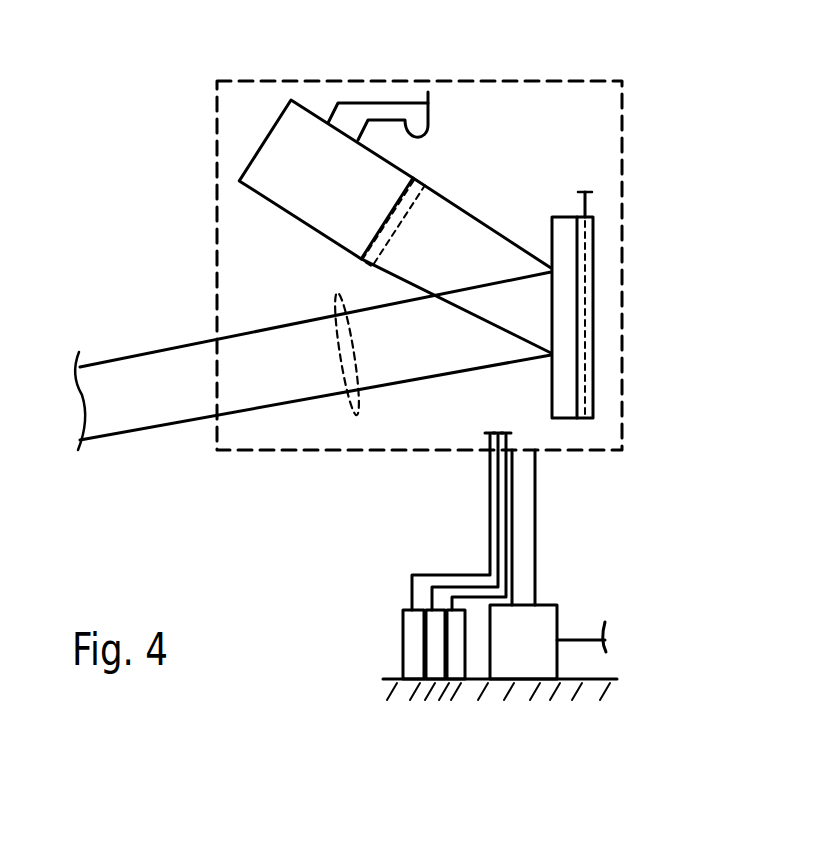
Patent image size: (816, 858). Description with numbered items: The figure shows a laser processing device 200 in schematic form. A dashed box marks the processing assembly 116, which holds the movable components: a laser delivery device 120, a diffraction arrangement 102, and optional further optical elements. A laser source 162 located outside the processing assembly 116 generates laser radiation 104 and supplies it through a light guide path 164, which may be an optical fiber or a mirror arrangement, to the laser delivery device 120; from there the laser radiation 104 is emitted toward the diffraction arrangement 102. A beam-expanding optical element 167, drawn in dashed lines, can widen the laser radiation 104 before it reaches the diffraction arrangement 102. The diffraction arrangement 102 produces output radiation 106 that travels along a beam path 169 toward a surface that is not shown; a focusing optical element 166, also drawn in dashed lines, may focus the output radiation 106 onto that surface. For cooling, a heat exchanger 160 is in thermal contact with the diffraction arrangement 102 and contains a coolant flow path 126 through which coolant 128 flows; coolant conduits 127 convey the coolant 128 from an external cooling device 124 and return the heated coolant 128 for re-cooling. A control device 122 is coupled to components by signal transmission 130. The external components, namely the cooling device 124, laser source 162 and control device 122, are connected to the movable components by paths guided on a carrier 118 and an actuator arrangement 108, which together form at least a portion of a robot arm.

The laser processing device 200 is at (131, 93).
The processing assembly 116 is at (216, 218).
The laser delivery device 120 is at (293, 223).
The beam-expanding optical element 167 is at (397, 252).
The laser radiation 104 is at (458, 200).
The output radiation 106 is at (280, 403).
The beam path 169 is at (260, 320).
The focusing optical element 166 is at (360, 410).
The diffraction arrangement 102 is at (553, 215).
The heat exchanger 160 is at (593, 350).
The coolant flow path 126 is at (586, 382).
The coolant 128 is at (590, 207).
The coolant conduits 127 is at (590, 200).
The light guide path 164 is at (365, 103).
The signal transmission 130 is at (432, 130).
The carrier 118 is at (537, 510).
The actuator arrangement 108 is at (533, 667).
The control device 122 is at (410, 643).
The laser source 162 is at (433, 665).
The cooling device 124 is at (453, 665).